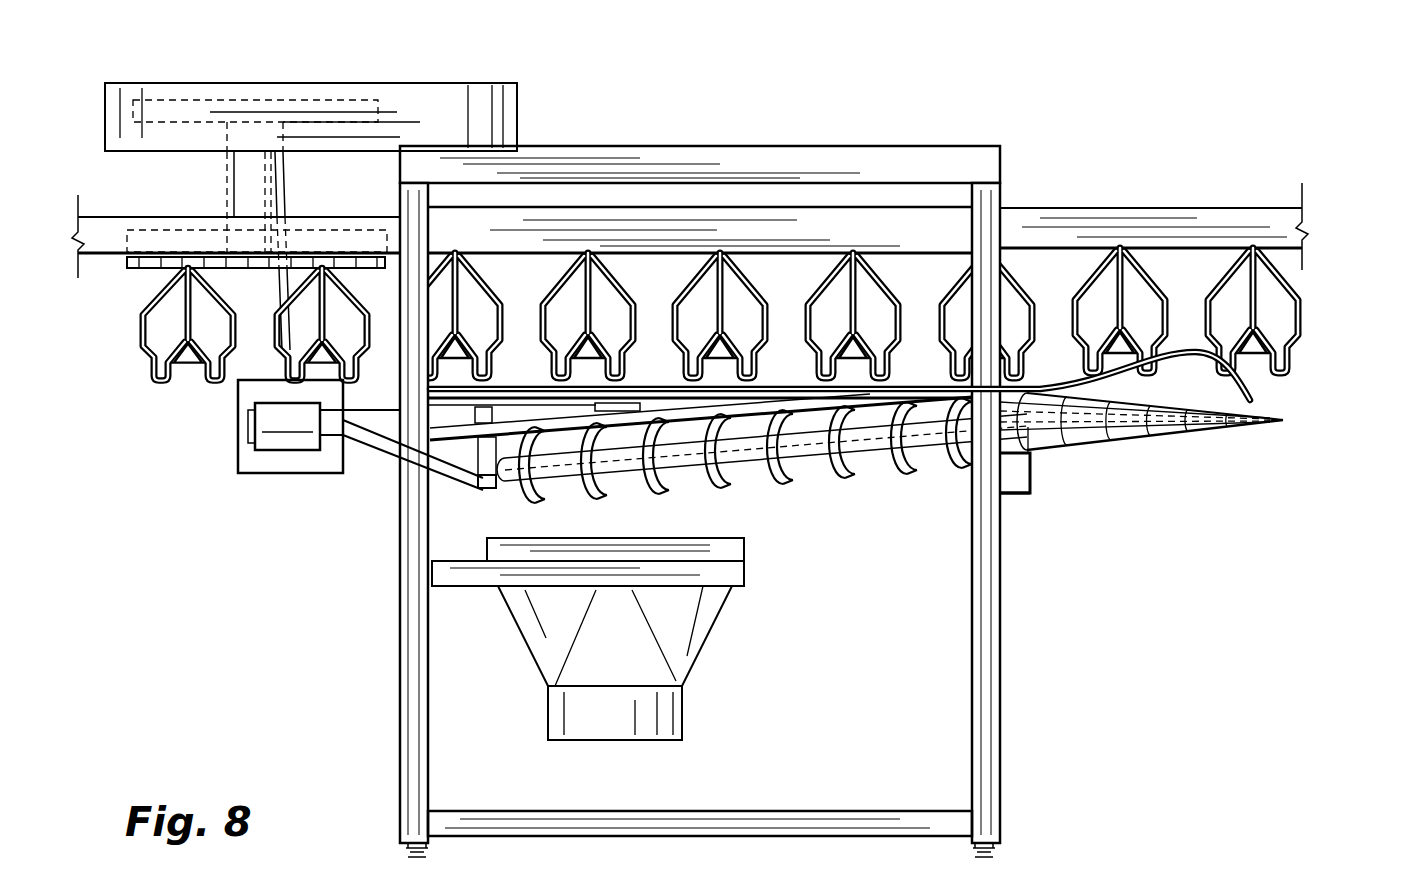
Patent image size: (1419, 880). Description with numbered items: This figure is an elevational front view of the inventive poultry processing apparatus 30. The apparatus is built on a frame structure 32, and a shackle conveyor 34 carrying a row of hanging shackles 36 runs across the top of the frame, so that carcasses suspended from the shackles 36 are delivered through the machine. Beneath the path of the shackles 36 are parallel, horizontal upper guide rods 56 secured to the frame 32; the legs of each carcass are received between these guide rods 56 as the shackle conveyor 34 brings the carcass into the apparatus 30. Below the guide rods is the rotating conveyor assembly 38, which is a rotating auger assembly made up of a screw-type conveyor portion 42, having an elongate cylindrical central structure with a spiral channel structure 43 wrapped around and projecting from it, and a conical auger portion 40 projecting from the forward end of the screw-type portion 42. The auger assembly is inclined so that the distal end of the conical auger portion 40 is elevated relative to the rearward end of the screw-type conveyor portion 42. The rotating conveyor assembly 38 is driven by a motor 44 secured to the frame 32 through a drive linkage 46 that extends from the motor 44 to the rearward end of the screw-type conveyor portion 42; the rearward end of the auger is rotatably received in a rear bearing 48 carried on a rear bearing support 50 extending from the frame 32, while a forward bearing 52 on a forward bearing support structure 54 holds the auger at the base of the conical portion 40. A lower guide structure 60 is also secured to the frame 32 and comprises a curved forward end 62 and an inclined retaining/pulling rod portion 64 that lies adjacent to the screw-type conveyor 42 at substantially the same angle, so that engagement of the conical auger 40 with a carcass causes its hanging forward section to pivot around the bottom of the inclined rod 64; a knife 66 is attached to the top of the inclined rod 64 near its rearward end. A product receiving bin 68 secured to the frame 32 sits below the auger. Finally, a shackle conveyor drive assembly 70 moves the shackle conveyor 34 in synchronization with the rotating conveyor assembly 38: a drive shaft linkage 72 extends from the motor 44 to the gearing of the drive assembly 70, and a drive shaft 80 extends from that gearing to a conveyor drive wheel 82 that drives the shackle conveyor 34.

The processing apparatus 30 is at (823, 107).
The frame structure 32 is at (985, 168).
The shackle conveyor 34 is at (1157, 222).
The shackles 36 is at (697, 287).
The rotating conveyor assembly 38 is at (927, 463).
The conical auger portion 40 is at (1170, 432).
The screw-type conveyor portion 42 is at (745, 470).
The spiral channel structure 43 is at (722, 483).
The motor 44 is at (285, 442).
The drive linkage 46 is at (380, 445).
The rear bearing 48 is at (492, 488).
The rear bearing support 50 is at (487, 415).
The forward bearing 52 is at (1030, 470).
The forward bearing support structure 54 is at (1017, 483).
The upper guide rods 56 is at (780, 390).
The lower guide structure 60 is at (1240, 398).
The curved forward end 62 is at (1240, 398).
The inclined retaining/pulling rod portion 64 is at (557, 460).
The knife 66 is at (615, 404).
The product receiving bin 68 is at (688, 648).
The shackle conveyor drive assembly 70 is at (397, 100).
The drive shaft linkage 72 is at (275, 352).
The drive shaft 80 is at (243, 180).
The conveyor drive wheel 82 is at (138, 275).